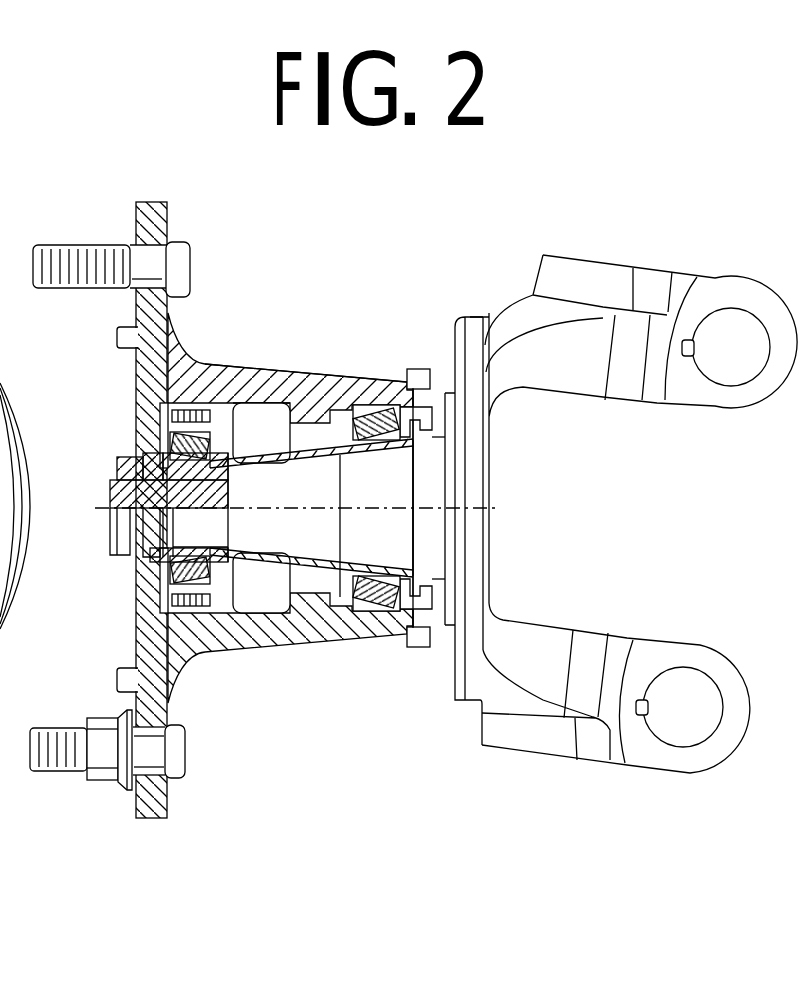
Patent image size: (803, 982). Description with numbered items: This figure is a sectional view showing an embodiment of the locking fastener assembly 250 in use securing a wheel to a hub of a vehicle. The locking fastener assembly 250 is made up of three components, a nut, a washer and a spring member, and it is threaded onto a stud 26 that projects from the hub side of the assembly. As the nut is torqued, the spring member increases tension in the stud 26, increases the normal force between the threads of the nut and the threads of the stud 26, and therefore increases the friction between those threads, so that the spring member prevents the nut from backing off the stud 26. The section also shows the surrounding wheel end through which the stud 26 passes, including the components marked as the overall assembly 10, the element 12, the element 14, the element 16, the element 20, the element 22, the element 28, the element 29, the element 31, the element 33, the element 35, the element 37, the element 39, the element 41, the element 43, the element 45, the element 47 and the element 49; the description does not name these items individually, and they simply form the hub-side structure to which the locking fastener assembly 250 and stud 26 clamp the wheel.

The wheel end assembly 10 is at (398, 522).
The bearing assembly 12 is at (304, 487).
The mounting flange 14 is at (465, 616).
The steering knuckle 16 is at (636, 226).
The hub 20 is at (250, 664).
The outer race 22 is at (228, 392).
The stud 26 is at (140, 270).
The spindle flange 28 is at (420, 475).
The inboard seal 29 is at (153, 434).
The spindle first portion 31 is at (390, 542).
The outboard rollers 33 is at (400, 477).
The outboard seal 35 is at (360, 380).
The spindle third portion 37 is at (207, 538).
The inboard rollers 39 is at (243, 458).
The spacer sleeve 41 is at (290, 565).
The spindle second portion 43 is at (300, 542).
The retaining nut 45 is at (115, 472).
The washer 47 is at (137, 585).
The spindle shoulder 49 is at (110, 490).
The locking fastener assembly 250 is at (88, 784).